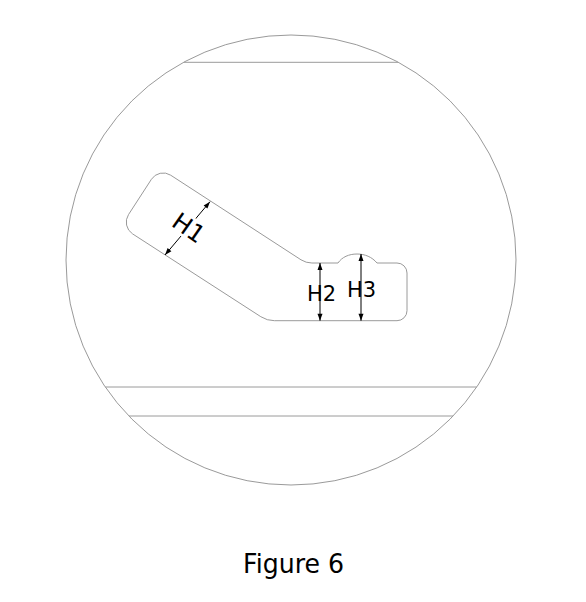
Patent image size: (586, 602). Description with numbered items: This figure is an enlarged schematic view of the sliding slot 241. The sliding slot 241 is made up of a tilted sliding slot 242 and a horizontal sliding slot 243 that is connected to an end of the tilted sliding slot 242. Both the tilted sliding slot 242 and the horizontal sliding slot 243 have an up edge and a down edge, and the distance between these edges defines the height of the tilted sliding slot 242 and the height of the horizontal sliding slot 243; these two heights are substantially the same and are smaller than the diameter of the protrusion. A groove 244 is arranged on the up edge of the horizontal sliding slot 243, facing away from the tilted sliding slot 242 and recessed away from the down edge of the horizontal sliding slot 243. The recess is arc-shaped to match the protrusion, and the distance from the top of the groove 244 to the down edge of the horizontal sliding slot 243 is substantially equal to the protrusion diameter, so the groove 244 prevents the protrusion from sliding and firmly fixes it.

The sliding slot 241 is at (291, 277).
The tilted sliding slot 242 is at (197, 280).
The horizontal sliding slot 243 is at (315, 321).
The groove 244 is at (368, 254).